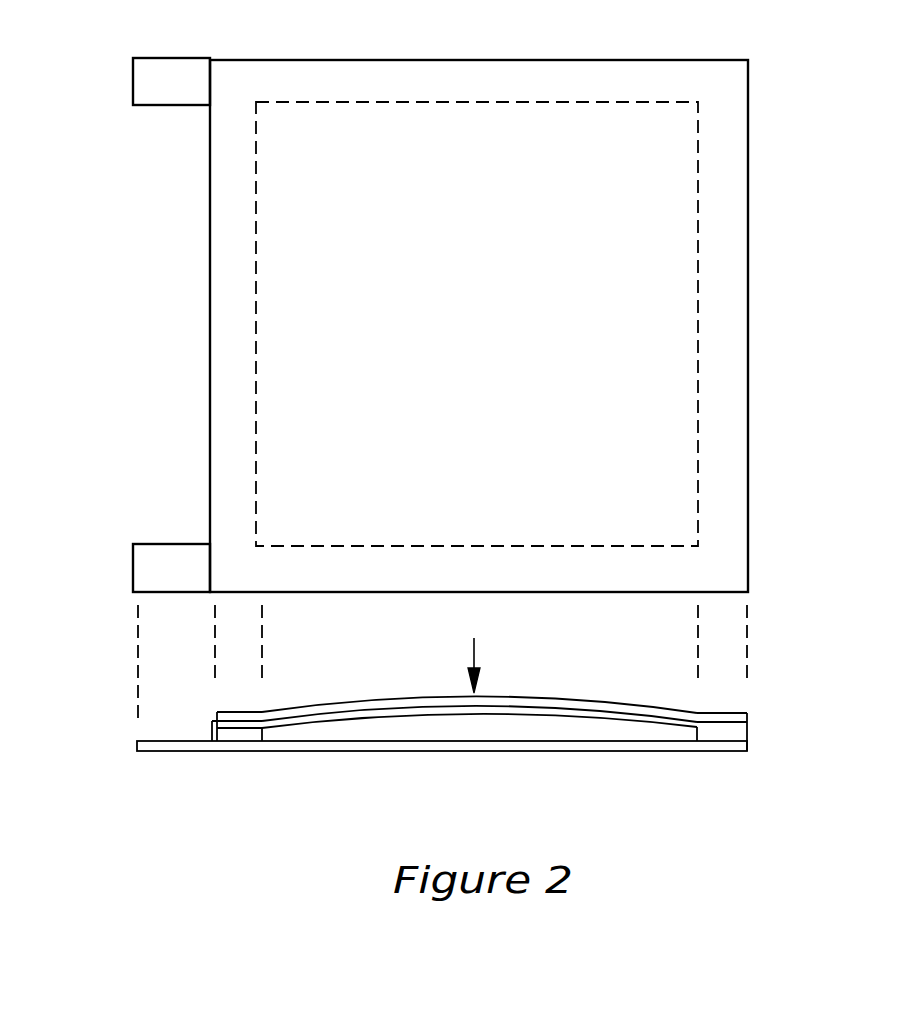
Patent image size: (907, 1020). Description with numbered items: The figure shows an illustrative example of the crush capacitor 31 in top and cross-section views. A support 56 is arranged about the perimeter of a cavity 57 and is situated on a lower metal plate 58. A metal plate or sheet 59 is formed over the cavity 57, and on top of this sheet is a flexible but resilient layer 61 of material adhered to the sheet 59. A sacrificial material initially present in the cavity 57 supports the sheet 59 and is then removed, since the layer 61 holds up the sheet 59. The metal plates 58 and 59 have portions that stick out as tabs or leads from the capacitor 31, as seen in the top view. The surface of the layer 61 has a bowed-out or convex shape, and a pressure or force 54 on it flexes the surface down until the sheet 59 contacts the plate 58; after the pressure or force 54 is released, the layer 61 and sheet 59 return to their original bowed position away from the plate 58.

The crush capacitor 31 is at (790, 96).
The pressure or force 54 is at (476, 652).
The support 56 is at (747, 735).
The cavity 57 is at (533, 733).
The metal plate 58 is at (143, 566).
The metal plate or sheet 59 is at (143, 78).
The flexible but resilient layer 61 is at (730, 342).